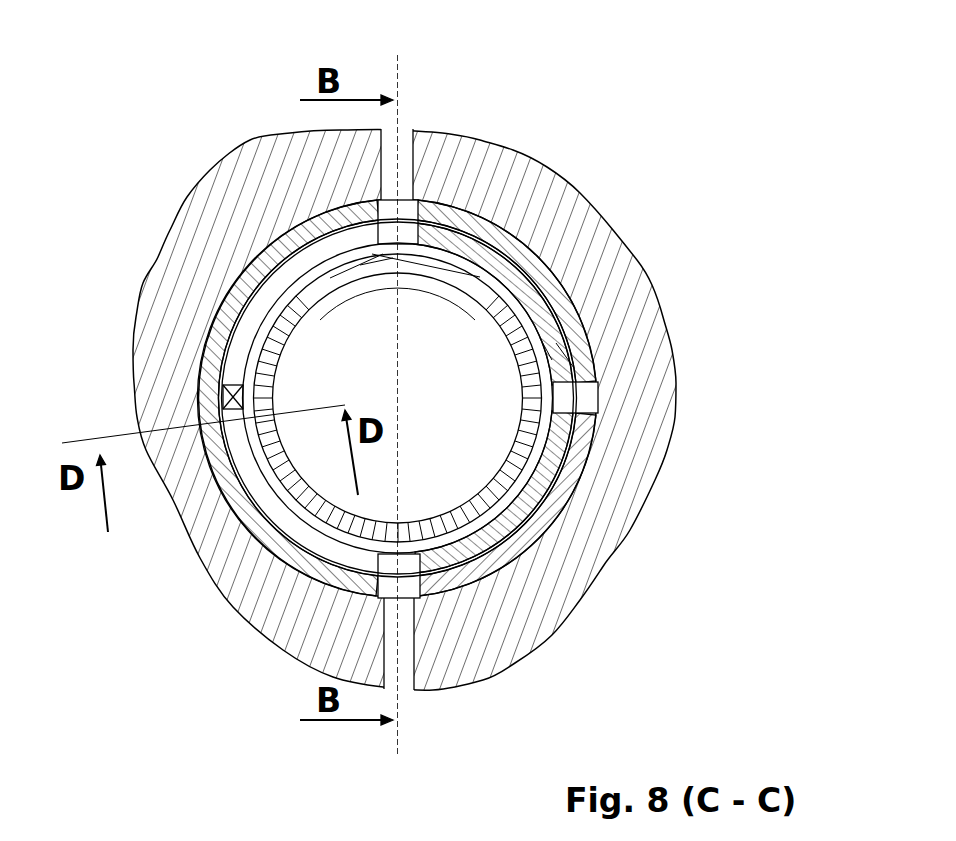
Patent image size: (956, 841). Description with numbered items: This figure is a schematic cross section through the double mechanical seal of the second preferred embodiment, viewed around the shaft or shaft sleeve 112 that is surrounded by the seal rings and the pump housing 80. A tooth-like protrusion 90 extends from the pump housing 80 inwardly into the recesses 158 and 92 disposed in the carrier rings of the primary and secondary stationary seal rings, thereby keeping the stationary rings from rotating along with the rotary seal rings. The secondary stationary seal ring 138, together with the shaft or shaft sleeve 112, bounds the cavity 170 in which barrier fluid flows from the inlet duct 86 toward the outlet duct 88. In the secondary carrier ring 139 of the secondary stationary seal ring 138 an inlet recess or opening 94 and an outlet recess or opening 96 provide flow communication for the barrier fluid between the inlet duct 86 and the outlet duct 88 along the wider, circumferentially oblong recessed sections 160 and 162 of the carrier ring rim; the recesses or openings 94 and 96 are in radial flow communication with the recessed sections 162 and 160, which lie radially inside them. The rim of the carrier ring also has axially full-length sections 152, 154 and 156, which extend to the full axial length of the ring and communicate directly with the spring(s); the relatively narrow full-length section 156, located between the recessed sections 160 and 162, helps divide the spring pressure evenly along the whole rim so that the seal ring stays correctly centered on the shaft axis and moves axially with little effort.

The pump housing 80 is at (300, 165).
The inlet duct 86 is at (403, 652).
The outlet duct 88 is at (405, 197).
The tooth-like protrusion 90 is at (575, 397).
The recess 92 is at (528, 327).
The inlet recess or opening 94 is at (388, 587).
The outlet recess or opening 96 is at (405, 222).
The shaft or shaft sleeve 112 is at (287, 518).
The secondary stationary seal ring 138 is at (613, 230).
The secondary carrier ring 139 is at (512, 372).
The axially full-length section 152 is at (560, 512).
The axially full-length section 154 is at (517, 282).
The axially full-length section 156 is at (222, 380).
The recessed section 158 is at (528, 327).
The recessed section 160 is at (327, 247).
The recessed section 162 is at (350, 518).
The cavity 170 is at (257, 333).